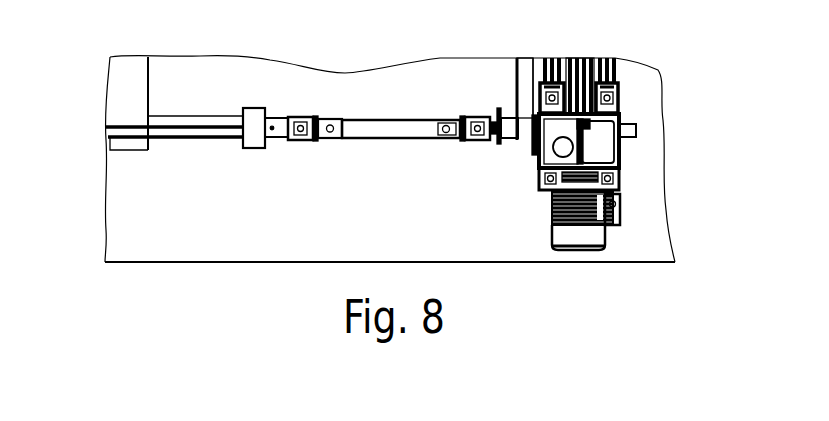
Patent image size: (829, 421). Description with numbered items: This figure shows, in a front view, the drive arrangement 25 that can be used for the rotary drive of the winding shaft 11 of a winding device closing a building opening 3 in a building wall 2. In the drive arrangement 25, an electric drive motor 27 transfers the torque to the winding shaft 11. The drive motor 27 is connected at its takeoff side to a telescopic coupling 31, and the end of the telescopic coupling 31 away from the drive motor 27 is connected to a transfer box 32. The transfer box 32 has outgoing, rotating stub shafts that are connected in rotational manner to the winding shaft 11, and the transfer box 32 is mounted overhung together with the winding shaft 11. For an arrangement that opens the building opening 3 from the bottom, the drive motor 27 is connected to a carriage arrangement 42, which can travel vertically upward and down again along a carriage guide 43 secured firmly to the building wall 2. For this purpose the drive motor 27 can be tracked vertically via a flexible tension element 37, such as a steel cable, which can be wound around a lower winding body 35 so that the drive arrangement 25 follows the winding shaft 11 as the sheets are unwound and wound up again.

The building wall 2 is at (403, 232).
The building opening 3 is at (138, 146).
The winding shaft 11 is at (203, 137).
The drive arrangement 25 is at (492, 78).
The drive motor 27 is at (613, 241).
The telescopic coupling 31 is at (358, 160).
The transfer box 32 is at (254, 161).
The lower winding body 35 is at (508, 146).
The tension element 37 is at (513, 78).
The carriage arrangement 42 is at (627, 97).
The carriage guide 43 is at (582, 57).